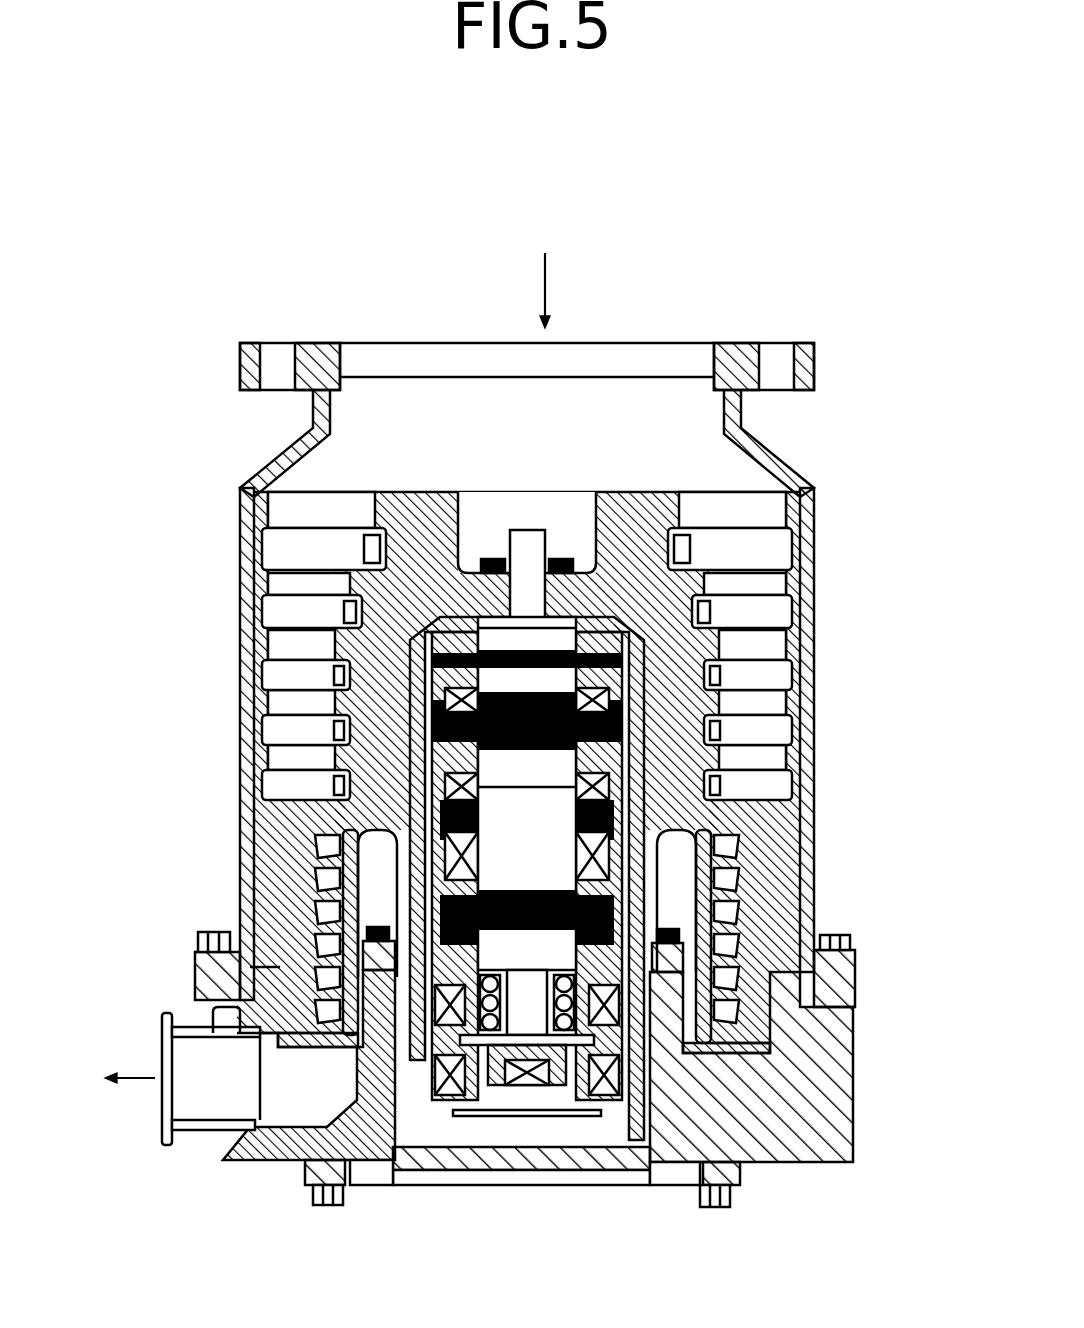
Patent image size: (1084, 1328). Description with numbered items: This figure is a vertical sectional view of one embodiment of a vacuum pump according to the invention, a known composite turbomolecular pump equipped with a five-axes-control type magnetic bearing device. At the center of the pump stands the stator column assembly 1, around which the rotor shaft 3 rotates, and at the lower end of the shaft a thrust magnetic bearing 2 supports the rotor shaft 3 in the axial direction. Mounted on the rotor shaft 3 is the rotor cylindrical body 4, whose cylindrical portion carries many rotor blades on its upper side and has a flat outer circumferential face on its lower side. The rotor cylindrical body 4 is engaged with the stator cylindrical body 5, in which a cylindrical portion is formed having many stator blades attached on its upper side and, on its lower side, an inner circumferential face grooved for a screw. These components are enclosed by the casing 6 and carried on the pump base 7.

The stator column assembly 1 is at (650, 770).
The thrust magnetic bearing 2 is at (660, 1048).
The rotor shaft 3 is at (540, 872).
The rotor cylindrical body 4 is at (660, 665).
The stator cylindrical body 5 is at (815, 505).
The casing 6 is at (785, 468).
The pump base 7 is at (805, 1125).